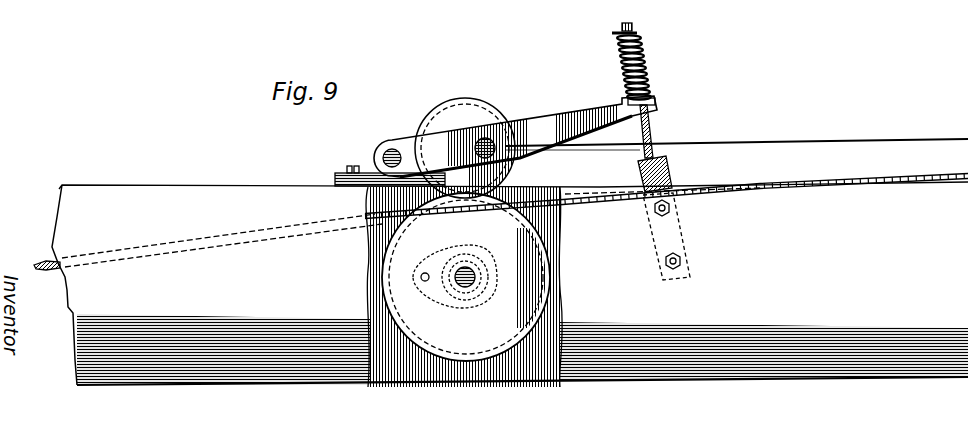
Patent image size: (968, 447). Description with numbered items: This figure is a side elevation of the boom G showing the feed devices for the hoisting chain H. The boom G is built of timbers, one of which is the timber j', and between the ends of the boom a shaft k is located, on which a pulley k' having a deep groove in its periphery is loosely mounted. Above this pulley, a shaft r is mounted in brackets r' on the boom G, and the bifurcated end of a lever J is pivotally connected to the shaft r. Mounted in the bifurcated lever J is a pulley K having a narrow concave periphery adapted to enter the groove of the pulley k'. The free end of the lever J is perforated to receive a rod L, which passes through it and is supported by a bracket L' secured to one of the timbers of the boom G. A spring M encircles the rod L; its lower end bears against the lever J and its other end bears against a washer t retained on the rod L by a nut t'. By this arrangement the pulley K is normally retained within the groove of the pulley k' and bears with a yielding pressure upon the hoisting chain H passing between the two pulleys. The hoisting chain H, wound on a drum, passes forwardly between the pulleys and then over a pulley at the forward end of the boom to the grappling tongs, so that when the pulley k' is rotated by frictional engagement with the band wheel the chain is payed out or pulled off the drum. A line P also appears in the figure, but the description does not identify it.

The pulley K is at (492, 108).
The lever J is at (515, 136).
The shaft r is at (394, 140).
The brackets r' is at (390, 162).
The boom G is at (572, 163).
The rod L is at (651, 128).
The bracket L' is at (672, 174).
The spring M is at (650, 66).
The washer t is at (614, 29).
The nut t' is at (634, 16).
The rail P is at (750, 144).
The hoisting chain H is at (53, 271).
The shaft k is at (456, 272).
The pulley k' is at (466, 277).
The timber j' is at (694, 245).